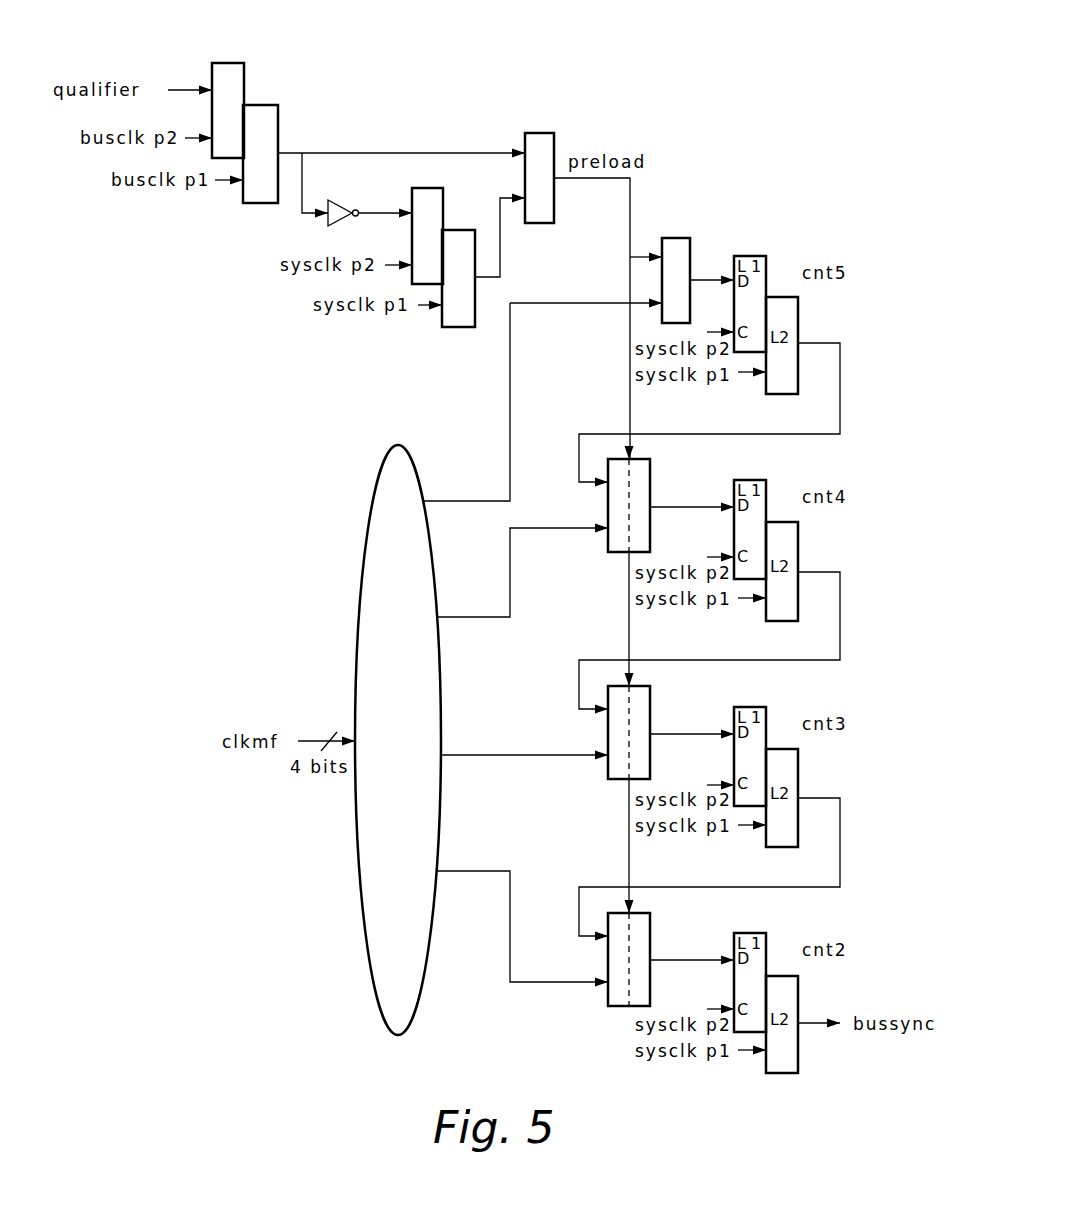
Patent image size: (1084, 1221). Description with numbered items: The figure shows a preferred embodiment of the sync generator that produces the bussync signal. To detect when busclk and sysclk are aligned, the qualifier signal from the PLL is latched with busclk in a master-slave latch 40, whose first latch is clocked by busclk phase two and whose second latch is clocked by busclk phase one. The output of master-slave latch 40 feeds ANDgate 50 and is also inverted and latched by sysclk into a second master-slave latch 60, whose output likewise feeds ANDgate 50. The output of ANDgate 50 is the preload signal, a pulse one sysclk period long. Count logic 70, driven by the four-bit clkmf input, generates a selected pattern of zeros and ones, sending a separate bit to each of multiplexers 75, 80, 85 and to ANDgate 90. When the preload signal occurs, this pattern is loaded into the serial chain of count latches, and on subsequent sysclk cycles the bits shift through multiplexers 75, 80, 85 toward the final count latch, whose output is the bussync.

The master-slave latch 40 is at (228, 63).
The ANDgate 50 is at (540, 133).
The master-slave latch 60 is at (458, 230).
The count logic 70 is at (362, 898).
The multiplexer 75 is at (648, 943).
The multiplexer 80 is at (651, 716).
The multiplexer 85 is at (650, 490).
The ANDgate 90 is at (676, 238).